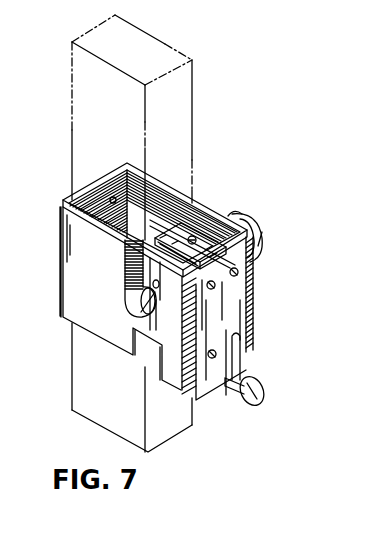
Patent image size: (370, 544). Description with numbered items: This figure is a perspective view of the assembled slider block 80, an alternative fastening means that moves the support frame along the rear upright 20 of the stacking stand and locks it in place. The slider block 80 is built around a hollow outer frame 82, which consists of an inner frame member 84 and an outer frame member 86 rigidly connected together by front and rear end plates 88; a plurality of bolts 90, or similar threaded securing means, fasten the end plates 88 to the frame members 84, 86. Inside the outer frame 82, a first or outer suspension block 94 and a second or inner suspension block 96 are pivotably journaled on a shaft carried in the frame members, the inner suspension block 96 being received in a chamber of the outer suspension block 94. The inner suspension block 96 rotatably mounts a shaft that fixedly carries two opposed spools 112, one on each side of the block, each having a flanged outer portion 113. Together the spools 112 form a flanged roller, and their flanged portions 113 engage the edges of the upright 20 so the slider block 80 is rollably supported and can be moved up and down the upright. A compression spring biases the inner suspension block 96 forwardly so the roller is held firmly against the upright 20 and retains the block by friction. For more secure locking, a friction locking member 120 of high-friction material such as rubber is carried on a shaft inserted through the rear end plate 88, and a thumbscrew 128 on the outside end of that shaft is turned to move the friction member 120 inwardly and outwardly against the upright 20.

The rear upright 20 is at (194, 70).
The slider block 80 is at (216, 217).
The hollow outer frame 82 is at (192, 217).
The inner frame member 84 is at (60, 242).
The outer frame member 86 is at (163, 192).
The end plate 88 is at (87, 184).
The bolt 90 is at (252, 275).
The outer suspension block 94 is at (248, 217).
The inner suspension block 96 is at (188, 236).
The spool 112 is at (264, 240).
The flanged outer portion 113 is at (128, 305).
The friction locking member 120 is at (155, 345).
The thumbscrew 128 is at (262, 386).